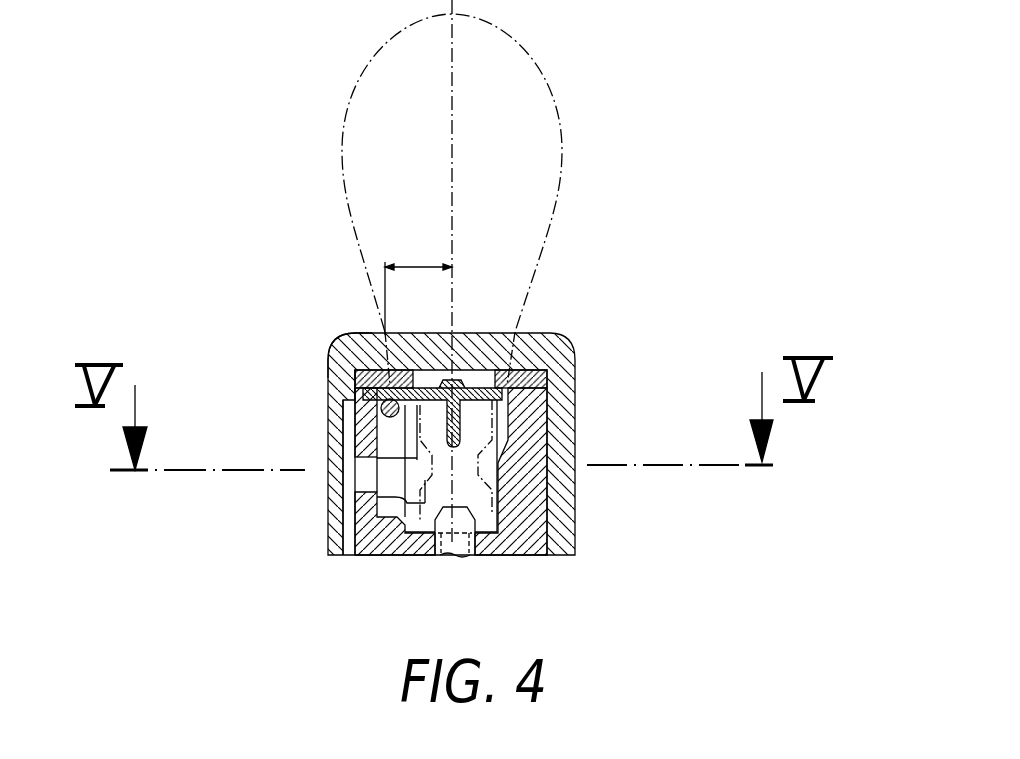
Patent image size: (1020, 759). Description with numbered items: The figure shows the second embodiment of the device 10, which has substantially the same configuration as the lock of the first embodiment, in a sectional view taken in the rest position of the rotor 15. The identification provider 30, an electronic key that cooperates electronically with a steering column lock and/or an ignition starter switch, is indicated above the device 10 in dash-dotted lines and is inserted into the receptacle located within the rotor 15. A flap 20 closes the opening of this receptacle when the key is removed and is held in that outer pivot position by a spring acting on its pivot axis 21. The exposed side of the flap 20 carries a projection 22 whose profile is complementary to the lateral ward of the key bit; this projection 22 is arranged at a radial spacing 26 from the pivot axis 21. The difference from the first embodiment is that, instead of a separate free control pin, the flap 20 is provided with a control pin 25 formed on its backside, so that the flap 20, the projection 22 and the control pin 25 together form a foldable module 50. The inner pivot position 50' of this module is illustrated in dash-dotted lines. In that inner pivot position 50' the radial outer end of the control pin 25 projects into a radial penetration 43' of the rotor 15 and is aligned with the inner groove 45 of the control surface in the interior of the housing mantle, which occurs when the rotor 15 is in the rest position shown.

The device 10 is at (580, 410).
The rotor 15 is at (513, 515).
The flap 20 is at (478, 382).
The pivot axis 21 is at (328, 357).
The projection 22 is at (456, 376).
The control pin 25 is at (545, 385).
The radial spacing 26 is at (421, 262).
The identification provider 30 is at (565, 85).
The radial penetration 43' is at (393, 556).
The inner groove 45 is at (347, 537).
The foldable module 50 is at (541, 371).
The inner pivot position of the module 50' is at (436, 564).